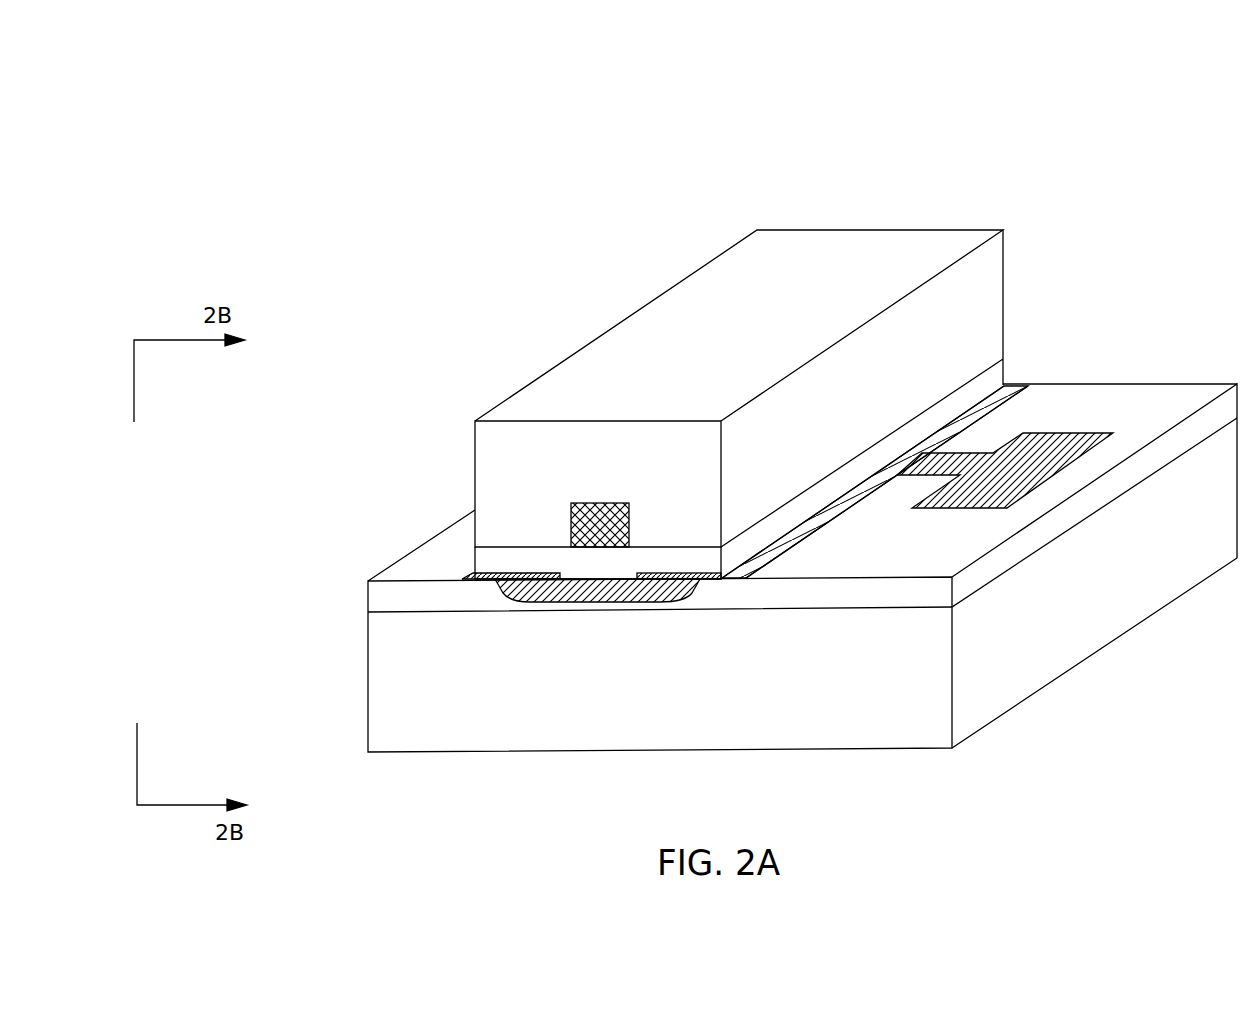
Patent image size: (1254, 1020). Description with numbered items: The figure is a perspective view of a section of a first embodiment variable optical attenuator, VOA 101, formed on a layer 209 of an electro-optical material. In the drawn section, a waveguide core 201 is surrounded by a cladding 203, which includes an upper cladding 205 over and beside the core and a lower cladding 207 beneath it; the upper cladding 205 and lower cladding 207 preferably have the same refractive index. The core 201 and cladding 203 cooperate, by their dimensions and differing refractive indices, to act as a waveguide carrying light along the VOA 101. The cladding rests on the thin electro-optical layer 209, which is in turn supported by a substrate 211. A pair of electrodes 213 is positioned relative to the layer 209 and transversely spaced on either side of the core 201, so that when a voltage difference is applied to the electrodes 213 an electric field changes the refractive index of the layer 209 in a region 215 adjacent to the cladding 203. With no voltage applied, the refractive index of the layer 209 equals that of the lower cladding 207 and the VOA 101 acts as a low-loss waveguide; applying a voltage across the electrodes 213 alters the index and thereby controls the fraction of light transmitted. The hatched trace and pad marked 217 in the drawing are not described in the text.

The VOA 101 is at (581, 109).
The waveguide core 201 is at (588, 503).
The cladding 203 is at (414, 230).
The upper cladding 205 is at (703, 325).
The lower cladding 207 is at (516, 546).
The layer of electro-optical material 209 is at (368, 598).
The substrate 211 is at (368, 665).
The pair of electrodes 213 is at (647, 601).
The region 215 is at (473, 577).
The conductive trace and pad 217 is at (1058, 433).